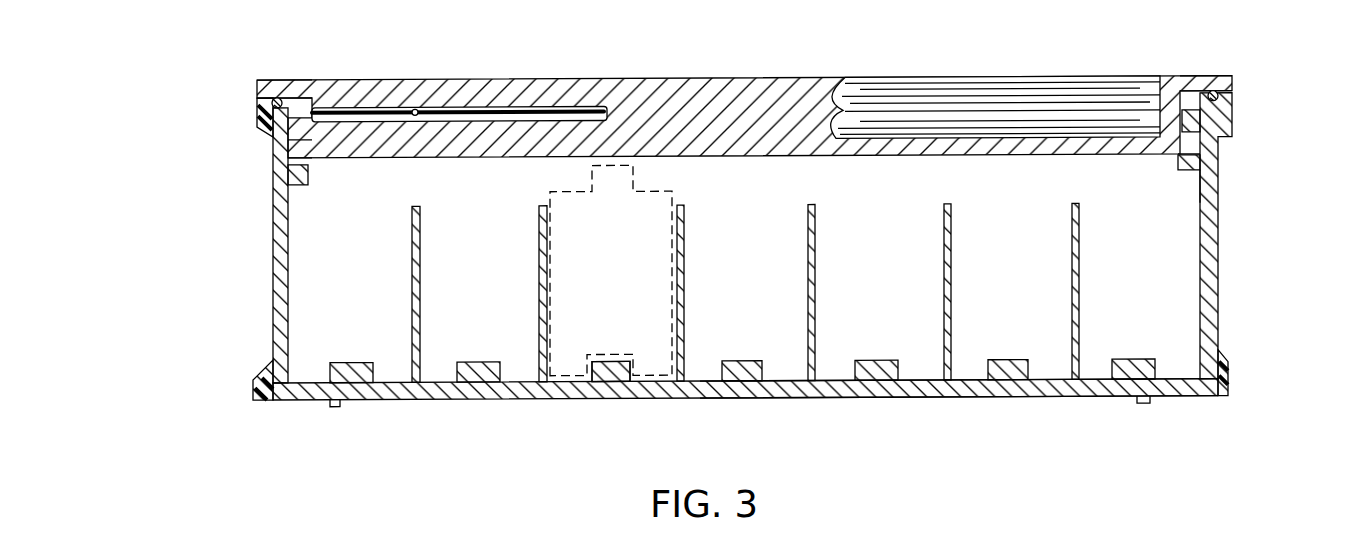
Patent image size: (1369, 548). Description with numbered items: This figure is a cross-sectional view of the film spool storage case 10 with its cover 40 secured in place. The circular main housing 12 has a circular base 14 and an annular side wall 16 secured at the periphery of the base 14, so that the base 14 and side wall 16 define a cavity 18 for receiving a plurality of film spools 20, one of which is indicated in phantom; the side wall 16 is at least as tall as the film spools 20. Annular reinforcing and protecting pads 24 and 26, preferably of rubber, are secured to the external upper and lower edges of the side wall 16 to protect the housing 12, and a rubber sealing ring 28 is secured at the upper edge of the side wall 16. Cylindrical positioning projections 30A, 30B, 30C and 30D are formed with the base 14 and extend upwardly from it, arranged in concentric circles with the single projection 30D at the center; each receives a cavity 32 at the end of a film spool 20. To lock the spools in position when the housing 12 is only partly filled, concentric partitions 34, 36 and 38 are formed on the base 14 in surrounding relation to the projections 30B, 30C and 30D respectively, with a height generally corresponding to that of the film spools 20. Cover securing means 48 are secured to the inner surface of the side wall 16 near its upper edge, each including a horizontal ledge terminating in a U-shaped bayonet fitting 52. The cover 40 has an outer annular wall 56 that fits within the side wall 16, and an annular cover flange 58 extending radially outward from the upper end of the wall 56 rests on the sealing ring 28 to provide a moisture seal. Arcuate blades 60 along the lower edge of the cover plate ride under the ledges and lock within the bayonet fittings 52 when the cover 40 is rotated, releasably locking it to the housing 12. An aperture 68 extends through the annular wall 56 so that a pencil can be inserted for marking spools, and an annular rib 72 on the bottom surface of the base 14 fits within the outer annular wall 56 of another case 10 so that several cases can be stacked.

The film spool storage case 10 is at (1272, 133).
The main housing 12 is at (255, 233).
The base 14 is at (390, 397).
The side wall 16 is at (285, 300).
The cavity 18 is at (843, 352).
The film spools 20 is at (570, 367).
The annular reinforcing and protecting pad 24 is at (258, 124).
The annular reinforcing and protecting pad 26 is at (255, 383).
The sealing ring 28 is at (271, 101).
The positioning projections 30A is at (342, 370).
The positioning projections 30B is at (479, 365).
The positioning projections 30C is at (614, 365).
The positioning projection 30D is at (740, 365).
The cavities 32 is at (595, 372).
The partition 34 is at (413, 236).
The partition 36 is at (539, 246).
The partition 38 is at (685, 247).
The cover 40 is at (510, 80).
The cover securing means 48 is at (1193, 180).
The bayonet fitting 52 is at (305, 122).
The outer annular wall 56 is at (1160, 88).
The annular cover flange 58 is at (273, 82).
The arcuate blades 60 is at (283, 152).
The aperture 68 is at (388, 110).
The annular rib 72 is at (332, 405).